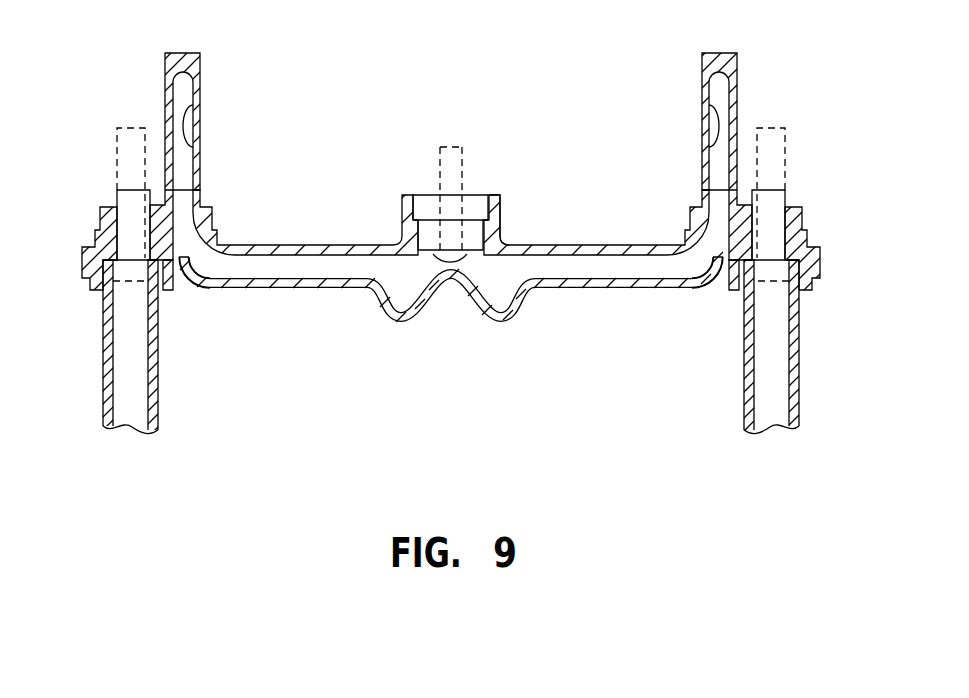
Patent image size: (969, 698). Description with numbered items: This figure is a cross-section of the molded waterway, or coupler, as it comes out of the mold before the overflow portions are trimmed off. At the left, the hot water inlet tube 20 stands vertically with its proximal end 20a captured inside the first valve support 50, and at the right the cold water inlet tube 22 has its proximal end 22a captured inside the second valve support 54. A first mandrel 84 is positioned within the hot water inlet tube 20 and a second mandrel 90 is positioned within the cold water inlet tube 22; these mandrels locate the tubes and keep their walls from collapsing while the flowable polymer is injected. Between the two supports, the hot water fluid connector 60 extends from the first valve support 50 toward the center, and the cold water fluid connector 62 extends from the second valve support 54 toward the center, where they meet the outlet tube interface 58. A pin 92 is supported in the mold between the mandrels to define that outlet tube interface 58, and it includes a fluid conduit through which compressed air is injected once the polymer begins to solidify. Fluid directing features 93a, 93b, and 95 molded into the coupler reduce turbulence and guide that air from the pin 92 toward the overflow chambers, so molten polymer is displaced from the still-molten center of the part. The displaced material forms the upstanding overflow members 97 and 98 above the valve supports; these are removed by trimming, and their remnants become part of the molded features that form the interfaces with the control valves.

The hot water inlet tube 20 is at (103, 377).
The proximal end of the hot water inlet tube 20a is at (170, 305).
The cold water inlet tube 22 is at (797, 352).
The proximal end of the cold water inlet tube 22a is at (732, 305).
The first valve support 50 is at (82, 261).
The second valve support 54 is at (820, 261).
The outlet tube interface 58 is at (497, 181).
The first fluid connector 60 is at (318, 245).
The second fluid connector 62 is at (590, 245).
The first mandrel 84 is at (122, 122).
The second mandrel 90 is at (780, 122).
The pin 92 is at (443, 147).
The fluid directing feature 93a is at (186, 291).
The fluid directing feature 93b is at (716, 291).
The fluid directing feature 95 is at (451, 303).
The overflow member 97 is at (200, 80).
The overflow member 98 is at (700, 77).